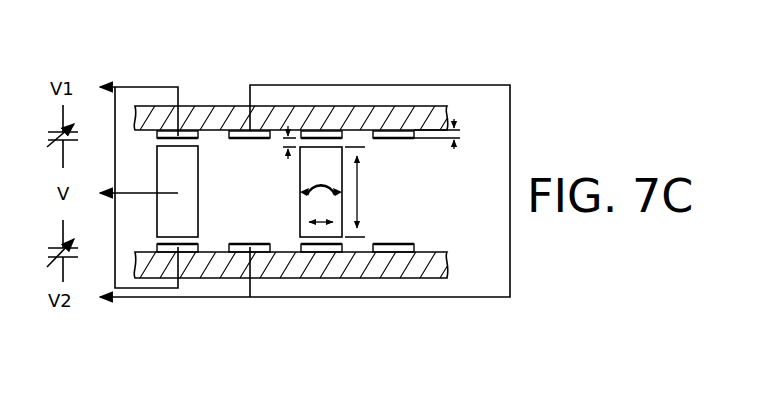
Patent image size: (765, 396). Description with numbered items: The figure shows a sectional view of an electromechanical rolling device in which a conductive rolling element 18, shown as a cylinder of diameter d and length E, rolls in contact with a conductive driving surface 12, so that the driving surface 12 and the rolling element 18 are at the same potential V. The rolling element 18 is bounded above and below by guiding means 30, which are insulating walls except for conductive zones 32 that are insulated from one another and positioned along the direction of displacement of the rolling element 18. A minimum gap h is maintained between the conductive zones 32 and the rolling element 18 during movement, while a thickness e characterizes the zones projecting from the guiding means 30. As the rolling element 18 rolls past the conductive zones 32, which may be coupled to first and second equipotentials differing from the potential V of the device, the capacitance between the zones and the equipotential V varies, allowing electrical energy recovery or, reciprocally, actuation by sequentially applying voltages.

The driving surface 12 is at (266, 203).
The rolling element 18 is at (180, 230).
The guiding means 30 is at (203, 122).
The conductive zone 32 is at (392, 131).